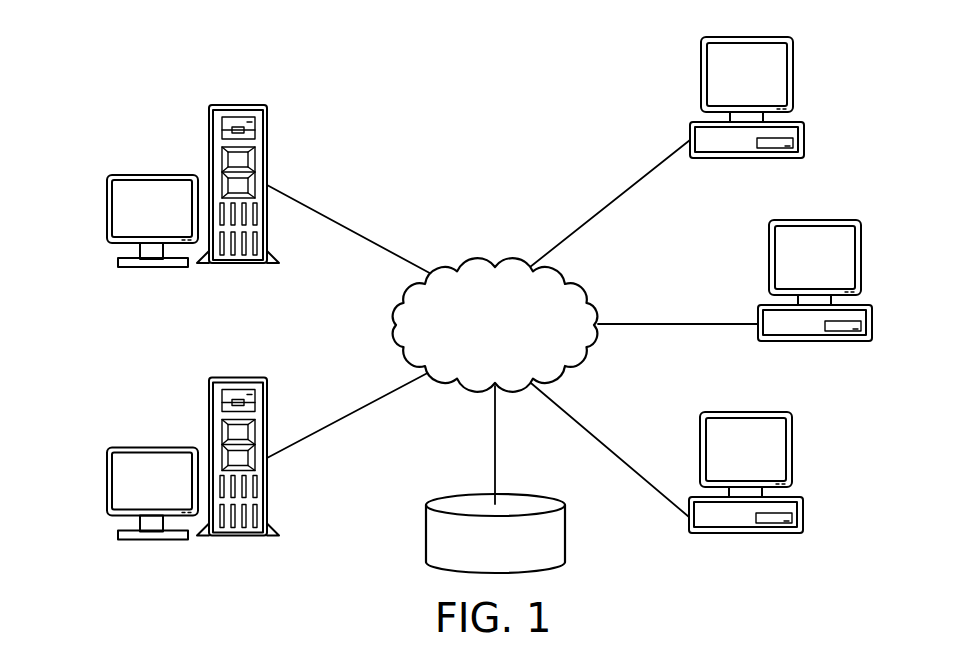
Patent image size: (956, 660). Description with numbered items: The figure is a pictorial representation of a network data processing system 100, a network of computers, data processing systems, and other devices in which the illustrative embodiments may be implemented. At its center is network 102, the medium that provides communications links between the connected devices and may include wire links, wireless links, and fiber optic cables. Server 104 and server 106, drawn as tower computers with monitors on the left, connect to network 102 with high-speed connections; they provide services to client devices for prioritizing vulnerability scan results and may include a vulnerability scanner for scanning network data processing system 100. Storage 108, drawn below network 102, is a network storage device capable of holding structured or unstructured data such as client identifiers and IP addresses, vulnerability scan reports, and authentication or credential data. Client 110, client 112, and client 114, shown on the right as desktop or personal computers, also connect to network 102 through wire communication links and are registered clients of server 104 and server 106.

The network data processing system 100 is at (343, 78).
The network 102 is at (488, 263).
The server 104 is at (107, 205).
The server 106 is at (107, 482).
The storage 108 is at (426, 530).
The client 110 is at (806, 130).
The client 112 is at (875, 313).
The client 114 is at (806, 530).